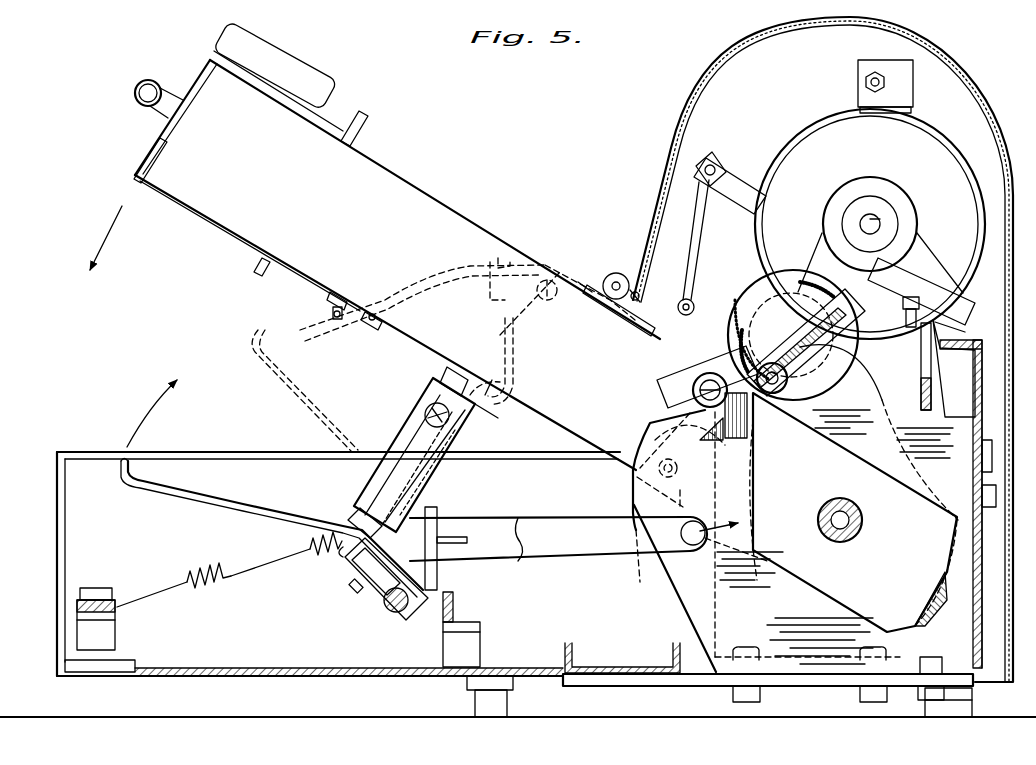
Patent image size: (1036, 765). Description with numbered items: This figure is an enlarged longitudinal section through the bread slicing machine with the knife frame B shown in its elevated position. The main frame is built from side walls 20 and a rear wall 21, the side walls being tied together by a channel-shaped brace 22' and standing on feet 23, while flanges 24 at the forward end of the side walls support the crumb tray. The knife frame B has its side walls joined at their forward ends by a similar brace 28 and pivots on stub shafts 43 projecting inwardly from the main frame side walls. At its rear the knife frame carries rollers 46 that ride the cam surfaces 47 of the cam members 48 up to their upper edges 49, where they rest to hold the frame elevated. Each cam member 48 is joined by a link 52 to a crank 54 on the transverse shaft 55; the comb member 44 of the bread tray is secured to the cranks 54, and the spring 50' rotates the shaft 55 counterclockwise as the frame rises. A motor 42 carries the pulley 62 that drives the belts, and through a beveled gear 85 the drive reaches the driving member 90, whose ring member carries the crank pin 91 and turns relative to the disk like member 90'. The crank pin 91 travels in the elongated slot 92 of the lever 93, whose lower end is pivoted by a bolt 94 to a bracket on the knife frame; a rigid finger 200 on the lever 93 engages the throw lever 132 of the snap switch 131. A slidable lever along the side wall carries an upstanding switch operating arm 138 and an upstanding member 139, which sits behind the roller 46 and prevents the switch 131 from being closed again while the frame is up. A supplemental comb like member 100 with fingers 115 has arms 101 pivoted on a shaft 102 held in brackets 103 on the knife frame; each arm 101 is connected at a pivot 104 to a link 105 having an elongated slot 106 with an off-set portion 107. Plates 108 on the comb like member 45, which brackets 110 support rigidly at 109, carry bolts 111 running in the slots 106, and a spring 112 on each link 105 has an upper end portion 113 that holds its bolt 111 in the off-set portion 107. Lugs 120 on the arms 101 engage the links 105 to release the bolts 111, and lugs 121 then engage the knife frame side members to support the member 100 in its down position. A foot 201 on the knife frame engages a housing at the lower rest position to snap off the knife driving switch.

The knife frame B is at (400, 205).
The side walls 20 is at (204, 466).
The rear wall 21 is at (998, 529).
The transversely extending brace 22' is at (622, 645).
The feet 23 is at (468, 692).
The flanges 24 is at (245, 677).
The transversely extending brace 28 is at (217, 233).
The motor 42 is at (941, 153).
The stub shafts 43 is at (861, 516).
The comb member 44 is at (262, 380).
The comb like member 45 is at (508, 386).
The rollers 46 is at (693, 386).
The cam surfaces 47 is at (646, 430).
The cam members 48 is at (676, 571).
The upper edges 49 is at (668, 412).
The spring 50' is at (229, 569).
The link 52 is at (541, 535).
The cranks 54 is at (358, 590).
The transversely extending shaft 55 is at (385, 610).
The pulley 62 is at (844, 199).
The beveled gear 85 is at (813, 240).
The driving member 90 is at (785, 333).
The disk like member 90' is at (791, 335).
The crank pin 91 is at (788, 391).
The elongated slot 92 is at (738, 307).
The lever 93 is at (736, 349).
The bolt 94 is at (657, 470).
The supplemental comb like member 100 is at (480, 246).
The arms 101 is at (592, 265).
The shaft 102 is at (616, 279).
The brackets 103 is at (638, 302).
The pivotal connection 104 is at (548, 305).
The link 105 is at (527, 347).
The elongated slot 106 is at (414, 445).
The off-set portion 107 is at (484, 405).
The plate 108 is at (398, 380).
The support point 109 is at (445, 558).
The brackets 110 is at (455, 604).
The bolt 111 is at (472, 430).
The spring 112 is at (358, 492).
The upper end portion 113 is at (448, 386).
The projecting fingers 115 is at (373, 324).
The lugs 120 is at (492, 308).
The lugs 121 is at (577, 280).
The snap switch 131 is at (902, 302).
The lever 132 is at (930, 314).
The switch operating arm 138 is at (922, 383).
The upstanding member 139 is at (755, 420).
The rigid finger 200 is at (897, 352).
The foot or projection 201 is at (335, 316).